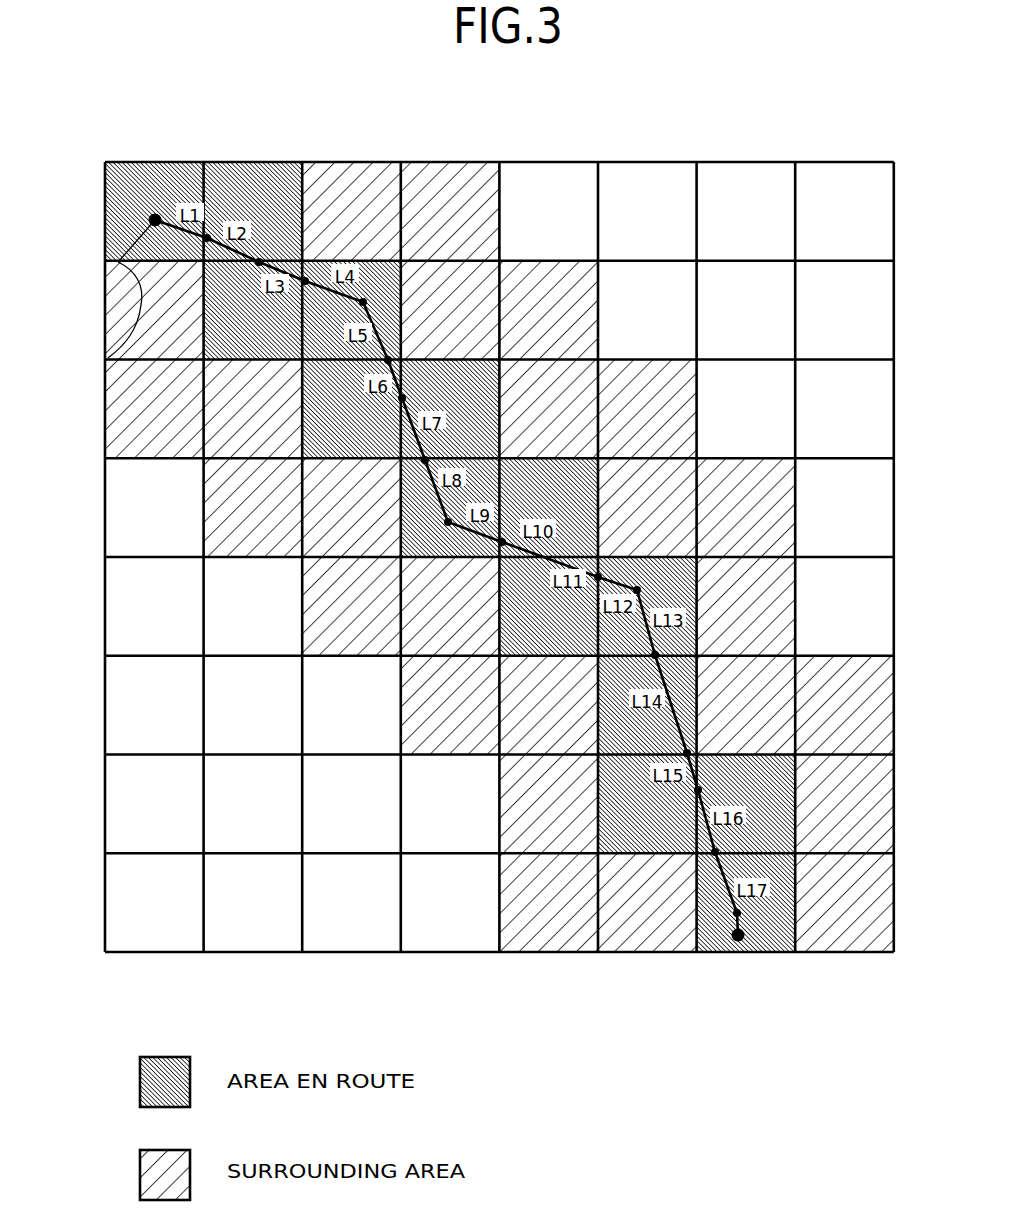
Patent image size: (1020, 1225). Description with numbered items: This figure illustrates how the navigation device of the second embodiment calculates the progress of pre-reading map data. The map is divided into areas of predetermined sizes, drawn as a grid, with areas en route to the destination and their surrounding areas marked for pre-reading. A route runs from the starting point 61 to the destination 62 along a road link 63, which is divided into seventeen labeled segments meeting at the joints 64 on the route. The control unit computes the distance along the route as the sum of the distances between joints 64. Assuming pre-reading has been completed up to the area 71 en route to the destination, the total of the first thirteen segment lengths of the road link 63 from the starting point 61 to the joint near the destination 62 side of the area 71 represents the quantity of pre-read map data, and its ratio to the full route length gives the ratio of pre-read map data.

The starting point 61 is at (161, 213).
The destination 62 is at (740, 952).
The road link 63 is at (108, 280).
The joints 64 is at (108, 353).
The area en route 71 is at (698, 556).